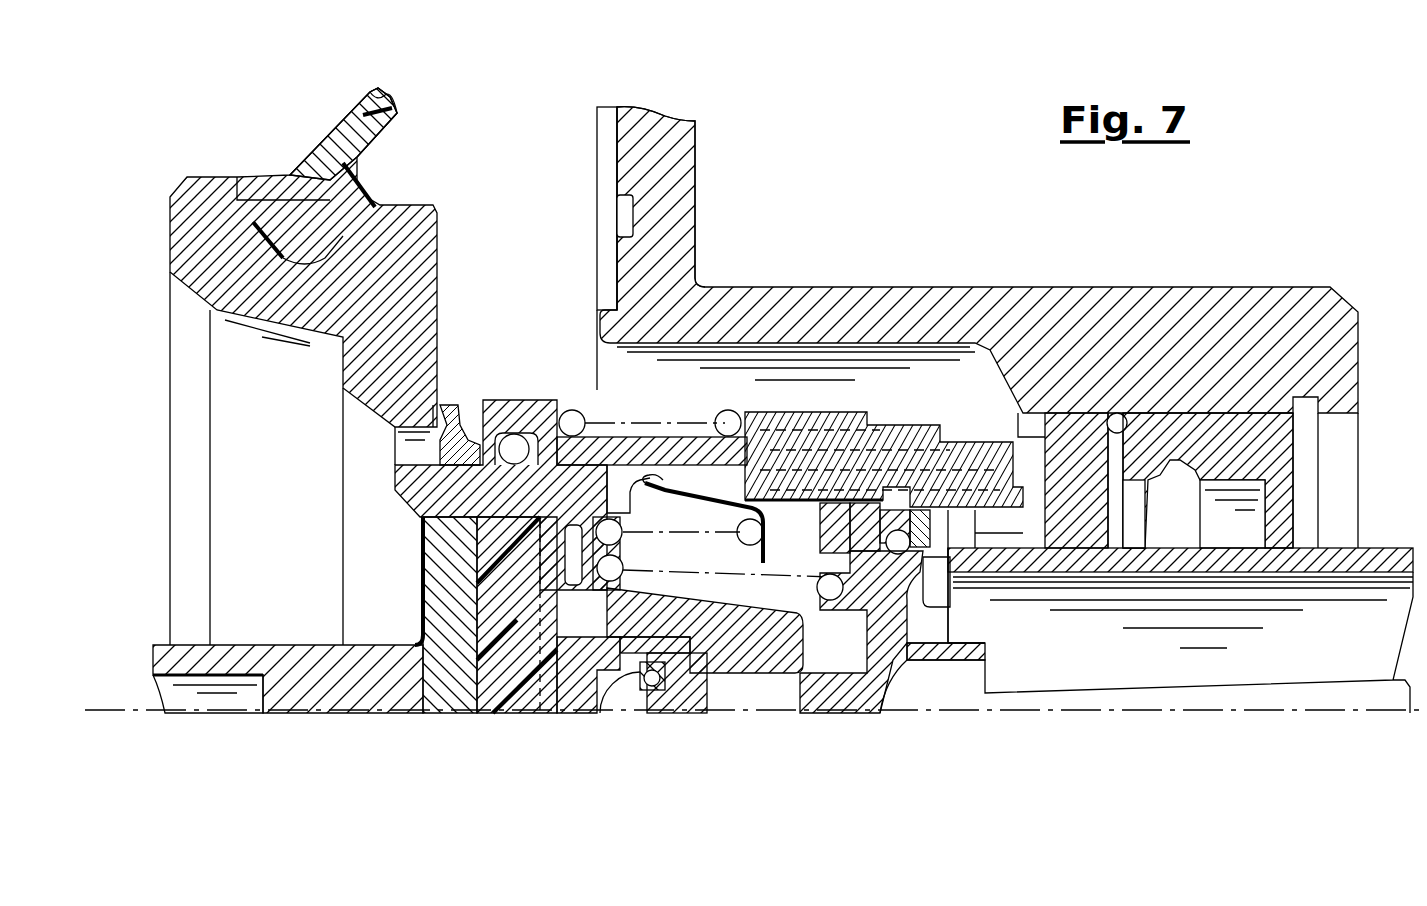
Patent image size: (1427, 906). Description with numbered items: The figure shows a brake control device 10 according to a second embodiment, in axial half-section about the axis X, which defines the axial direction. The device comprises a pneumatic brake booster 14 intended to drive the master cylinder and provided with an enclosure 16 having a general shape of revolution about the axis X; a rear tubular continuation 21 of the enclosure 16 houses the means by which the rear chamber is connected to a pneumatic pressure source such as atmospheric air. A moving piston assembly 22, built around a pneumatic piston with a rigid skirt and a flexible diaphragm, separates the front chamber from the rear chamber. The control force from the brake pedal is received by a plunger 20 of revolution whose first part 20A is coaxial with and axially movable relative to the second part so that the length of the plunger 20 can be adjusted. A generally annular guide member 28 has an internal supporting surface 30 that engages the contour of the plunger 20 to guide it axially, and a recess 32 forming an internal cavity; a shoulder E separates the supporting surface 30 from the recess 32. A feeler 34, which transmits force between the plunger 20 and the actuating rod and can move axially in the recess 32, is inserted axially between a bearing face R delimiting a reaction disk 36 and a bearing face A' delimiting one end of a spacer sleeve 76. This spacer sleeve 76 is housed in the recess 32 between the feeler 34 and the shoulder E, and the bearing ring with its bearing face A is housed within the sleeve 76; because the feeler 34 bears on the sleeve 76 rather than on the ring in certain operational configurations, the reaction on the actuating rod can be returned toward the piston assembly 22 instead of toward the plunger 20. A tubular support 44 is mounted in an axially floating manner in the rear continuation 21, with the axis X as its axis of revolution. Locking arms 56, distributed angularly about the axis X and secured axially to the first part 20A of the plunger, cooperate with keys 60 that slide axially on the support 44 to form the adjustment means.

The brake control device 10 is at (885, 112).
The pneumatic brake booster 14 is at (698, 153).
The enclosure 16 is at (680, 195).
The plunger 20 is at (1000, 658).
The first part of the plunger 20A is at (958, 592).
The rear tubular continuation 21 is at (1165, 315).
The piston assembly 22 is at (195, 224).
The guide member 28 is at (822, 685).
The internal supporting surface 30 is at (773, 675).
The recess 32 is at (668, 667).
The feeler 34 is at (577, 700).
The reaction disk 36 is at (510, 612).
The tubular support 44 is at (1346, 545).
The arm 56 is at (718, 490).
The key 60 is at (822, 445).
The spacer sleeve 76 is at (640, 677).
The bearing face A is at (611, 719).
The bearing face A' is at (726, 555).
The shoulder E is at (688, 665).
The bearing face R is at (537, 697).
The axis X is at (1305, 713).